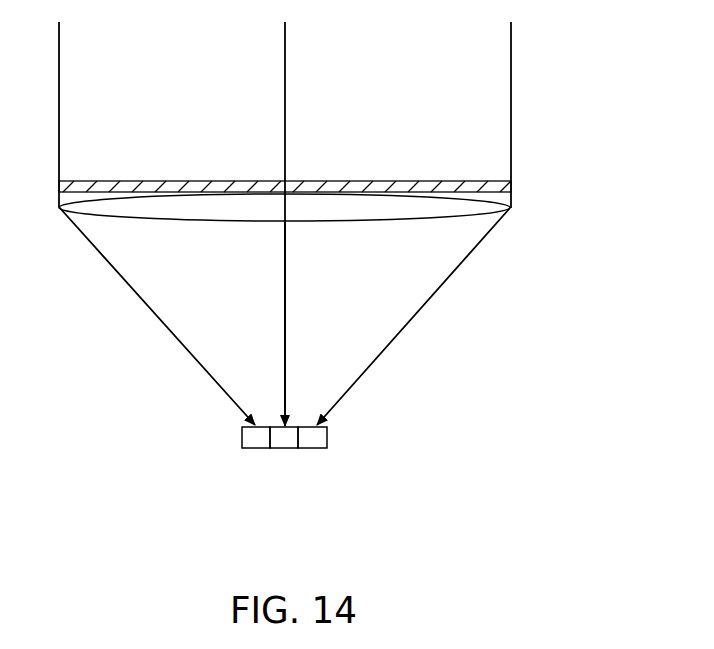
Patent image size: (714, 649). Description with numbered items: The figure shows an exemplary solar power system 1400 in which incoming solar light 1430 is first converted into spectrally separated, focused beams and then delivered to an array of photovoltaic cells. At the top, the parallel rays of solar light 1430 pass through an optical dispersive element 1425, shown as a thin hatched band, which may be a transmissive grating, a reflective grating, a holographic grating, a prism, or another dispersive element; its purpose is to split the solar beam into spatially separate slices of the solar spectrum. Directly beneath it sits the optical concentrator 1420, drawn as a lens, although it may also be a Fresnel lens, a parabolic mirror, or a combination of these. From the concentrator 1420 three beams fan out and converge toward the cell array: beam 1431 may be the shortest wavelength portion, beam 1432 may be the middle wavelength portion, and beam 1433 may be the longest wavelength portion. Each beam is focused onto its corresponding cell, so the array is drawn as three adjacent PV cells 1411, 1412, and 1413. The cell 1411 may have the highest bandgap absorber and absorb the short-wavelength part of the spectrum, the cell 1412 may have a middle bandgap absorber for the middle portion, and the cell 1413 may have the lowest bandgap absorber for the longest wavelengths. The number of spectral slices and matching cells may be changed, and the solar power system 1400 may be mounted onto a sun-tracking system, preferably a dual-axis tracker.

The solar power system 1400 is at (560, 304).
The PV cell 1411 is at (330, 433).
The PV cell 1412 is at (283, 450).
The PV cell 1413 is at (240, 433).
The optical concentrator 1420 is at (480, 215).
The optical dispersive element 1425 is at (239, 181).
The solar light 1430 is at (59, 58).
The beam 1431 is at (410, 320).
The beam 1432 is at (285, 272).
The beam 1433 is at (158, 318).